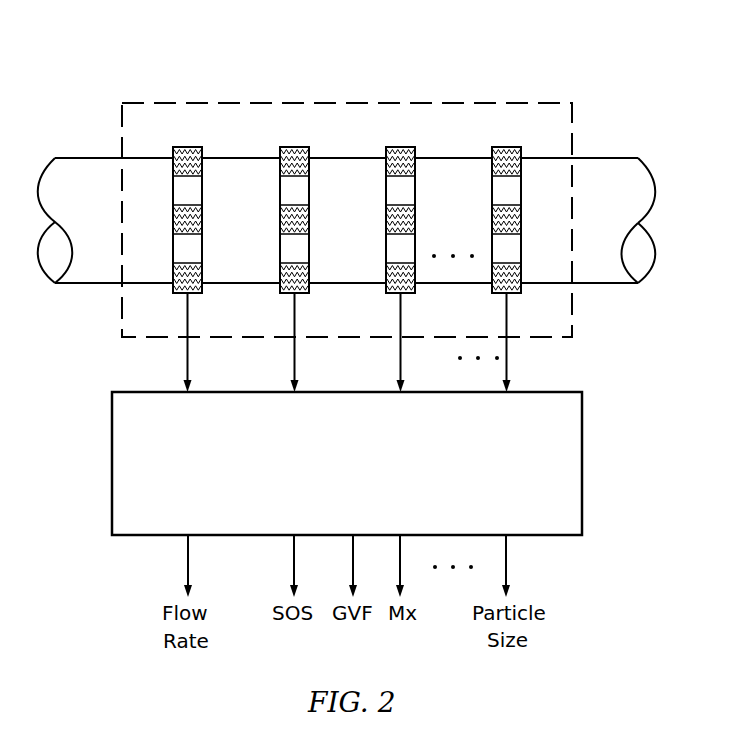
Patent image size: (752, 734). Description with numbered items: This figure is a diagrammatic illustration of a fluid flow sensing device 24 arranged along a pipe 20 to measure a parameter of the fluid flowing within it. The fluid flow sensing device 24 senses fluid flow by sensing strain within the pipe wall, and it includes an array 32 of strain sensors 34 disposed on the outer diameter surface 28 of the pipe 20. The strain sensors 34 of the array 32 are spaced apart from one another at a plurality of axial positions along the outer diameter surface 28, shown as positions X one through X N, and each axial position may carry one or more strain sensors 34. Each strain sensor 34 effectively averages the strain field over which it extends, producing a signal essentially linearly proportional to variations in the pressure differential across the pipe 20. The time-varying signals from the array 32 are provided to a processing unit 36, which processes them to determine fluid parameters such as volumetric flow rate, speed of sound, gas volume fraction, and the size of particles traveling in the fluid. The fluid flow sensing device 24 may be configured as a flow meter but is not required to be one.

The pipe 20 is at (623, 150).
The fluid flow sensing device 24 is at (594, 82).
The outer diameter surface 28 is at (635, 193).
The array 32 is at (458, 103).
The strain sensors 34 is at (202, 197).
The processing unit 36 is at (582, 457).